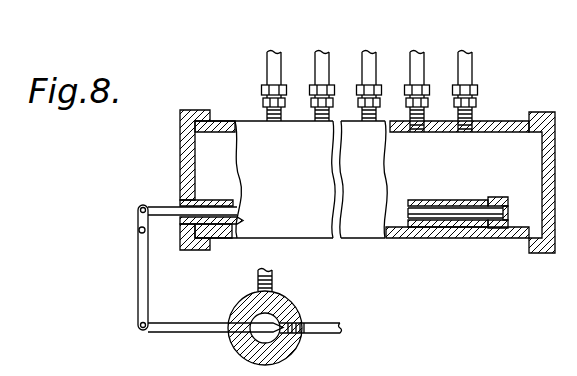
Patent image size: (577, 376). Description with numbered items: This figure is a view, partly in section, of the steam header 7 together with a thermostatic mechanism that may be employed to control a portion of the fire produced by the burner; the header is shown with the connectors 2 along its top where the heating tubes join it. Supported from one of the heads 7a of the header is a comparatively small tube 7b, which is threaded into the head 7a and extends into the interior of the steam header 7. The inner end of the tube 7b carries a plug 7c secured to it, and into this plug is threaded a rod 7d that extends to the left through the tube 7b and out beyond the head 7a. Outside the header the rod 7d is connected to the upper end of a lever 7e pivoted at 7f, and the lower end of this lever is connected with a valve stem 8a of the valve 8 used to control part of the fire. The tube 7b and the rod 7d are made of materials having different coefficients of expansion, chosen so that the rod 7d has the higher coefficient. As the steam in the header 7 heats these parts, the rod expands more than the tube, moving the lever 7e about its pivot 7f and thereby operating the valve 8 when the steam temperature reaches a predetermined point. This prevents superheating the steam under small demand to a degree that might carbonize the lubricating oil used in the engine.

The bolt 2 is at (270, 70).
The steam header 7 is at (473, 236).
The head 7a is at (186, 166).
The tube 7b is at (417, 200).
The plug 7c is at (505, 200).
The rod 7d is at (448, 212).
The lever 7e is at (138, 270).
The pivot 7f is at (138, 231).
The valve 8 is at (238, 347).
The valve stem 8a is at (180, 325).